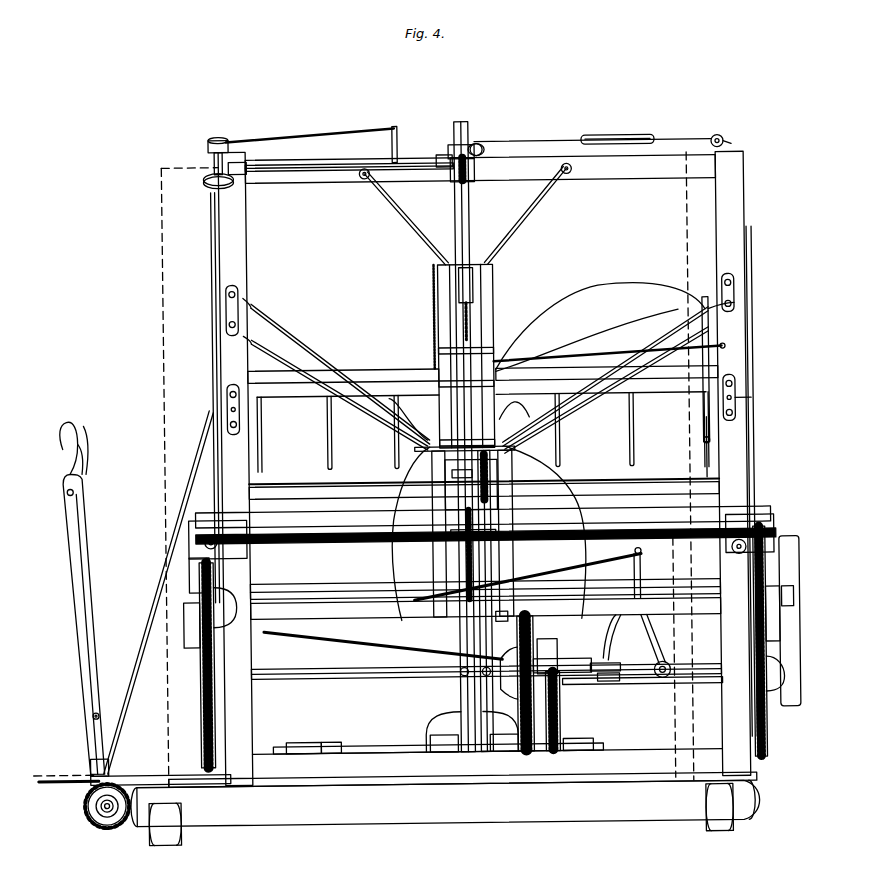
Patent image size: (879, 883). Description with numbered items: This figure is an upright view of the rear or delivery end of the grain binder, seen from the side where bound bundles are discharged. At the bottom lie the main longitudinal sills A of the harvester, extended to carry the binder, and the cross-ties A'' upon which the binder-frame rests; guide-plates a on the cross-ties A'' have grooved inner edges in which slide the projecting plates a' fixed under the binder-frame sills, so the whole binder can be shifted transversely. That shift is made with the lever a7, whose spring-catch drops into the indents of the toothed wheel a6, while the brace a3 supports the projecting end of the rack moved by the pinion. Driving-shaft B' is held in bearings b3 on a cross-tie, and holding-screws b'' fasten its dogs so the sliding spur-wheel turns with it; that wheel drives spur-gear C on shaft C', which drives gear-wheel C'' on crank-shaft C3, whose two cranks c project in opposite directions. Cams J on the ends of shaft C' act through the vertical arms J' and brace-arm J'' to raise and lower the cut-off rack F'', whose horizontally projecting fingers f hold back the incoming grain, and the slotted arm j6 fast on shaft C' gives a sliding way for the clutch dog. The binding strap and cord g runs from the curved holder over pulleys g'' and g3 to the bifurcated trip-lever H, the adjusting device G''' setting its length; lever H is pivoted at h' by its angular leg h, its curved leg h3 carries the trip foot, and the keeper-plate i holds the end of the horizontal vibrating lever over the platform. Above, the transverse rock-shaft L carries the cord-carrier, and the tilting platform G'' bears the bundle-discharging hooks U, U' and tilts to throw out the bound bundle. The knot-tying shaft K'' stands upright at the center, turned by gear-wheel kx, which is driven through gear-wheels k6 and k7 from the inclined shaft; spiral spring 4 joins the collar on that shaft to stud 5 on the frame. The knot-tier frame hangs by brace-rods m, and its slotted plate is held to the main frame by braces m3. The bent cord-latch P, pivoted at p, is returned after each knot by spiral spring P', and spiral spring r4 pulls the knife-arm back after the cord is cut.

The upright knot-tying shaft K'' is at (467, 428).
The gear-wheel kx is at (454, 158).
The pulley g'' is at (484, 148).
The binding strap and cord g is at (592, 134).
The tilting platform G'' is at (617, 130).
The pulley g3 is at (726, 137).
The spiral spring 4 is at (310, 129).
The stud 5 is at (401, 144).
The gear-wheel k7 is at (236, 151).
The gear-wheel k6 is at (321, 166).
The braces m3 is at (465, 214).
The brace-rods m is at (489, 374).
The bent cord-latch P is at (600, 326).
The spiral spring P' is at (463, 357).
The spiral spring r4 is at (609, 349).
The cross bar F'' is at (483, 382).
The horizontally-projecting fingers f is at (483, 432).
The pivot p is at (698, 387).
The bundle-discharging hooks U is at (410, 509).
The wire U' is at (544, 510).
The rock-shaft L is at (482, 537).
The cord-adjusting device G''' is at (483, 518).
The crank-shaft C3 is at (485, 581).
The gear-wheel C'' is at (528, 574).
The shaft C' is at (486, 653).
The spur-gear wheel C is at (517, 683).
The cranks c is at (493, 618).
The slotted arm j6 is at (540, 648).
The bifurcated trip-lever H is at (646, 572).
The curved leg h3 is at (612, 637).
The angular leg h is at (653, 639).
The pivot h' is at (662, 677).
The keeper-plate i is at (605, 665).
The cams J is at (483, 647).
The vertical arms J' is at (476, 622).
The brace-arm J'' is at (790, 621).
The lever a7 is at (82, 598).
The supporting-brace a3 is at (158, 592).
The projecting plates a' is at (135, 772).
The toothed or indent wheel a6 is at (85, 806).
The guide-plates a is at (463, 786).
The main longitudinal sills A is at (441, 814).
The cross-ties A'' is at (445, 803).
The driving-shaft B' is at (487, 739).
The bearings b3 is at (439, 738).
The holding-screws b'' is at (331, 740).